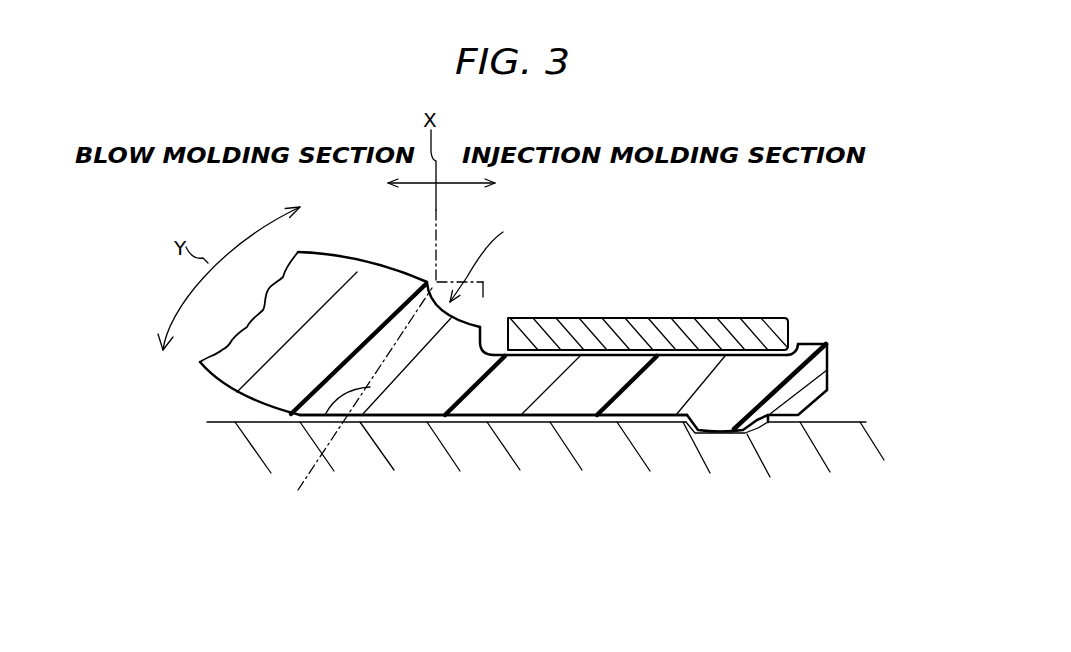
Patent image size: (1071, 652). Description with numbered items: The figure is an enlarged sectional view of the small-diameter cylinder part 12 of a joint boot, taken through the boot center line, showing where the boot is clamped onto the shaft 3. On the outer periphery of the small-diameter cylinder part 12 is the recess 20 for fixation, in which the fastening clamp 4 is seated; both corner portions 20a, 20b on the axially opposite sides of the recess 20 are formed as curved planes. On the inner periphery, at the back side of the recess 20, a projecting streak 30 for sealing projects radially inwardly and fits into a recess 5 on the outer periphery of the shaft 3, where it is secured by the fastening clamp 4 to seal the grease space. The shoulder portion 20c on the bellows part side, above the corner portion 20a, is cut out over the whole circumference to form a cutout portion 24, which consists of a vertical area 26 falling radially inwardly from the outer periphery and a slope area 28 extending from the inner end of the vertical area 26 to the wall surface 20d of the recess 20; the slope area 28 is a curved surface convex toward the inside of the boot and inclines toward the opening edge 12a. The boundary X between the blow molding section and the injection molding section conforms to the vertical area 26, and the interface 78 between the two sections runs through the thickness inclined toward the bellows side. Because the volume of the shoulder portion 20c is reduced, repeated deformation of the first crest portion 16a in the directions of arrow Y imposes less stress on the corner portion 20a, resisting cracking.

The shaft 3 is at (856, 422).
The fastening clamp 4 is at (692, 318).
The recess 5 is at (829, 352).
The small-diameter cylinder part 12 is at (823, 328).
The opening edge 12a is at (829, 372).
The first crest portion 16a is at (313, 272).
The recess for fixation 20 is at (765, 353).
The corner portion 20a is at (484, 345).
The corner portion 20b is at (792, 341).
The shoulder portion 20c is at (493, 281).
The wall surface 20d is at (487, 323).
The cutout portion 24 is at (484, 256).
The vertical area 26 is at (441, 282).
The slope area 28 is at (483, 297).
The projecting streak for sealing 30 is at (722, 420).
The interface 78 is at (357, 404).